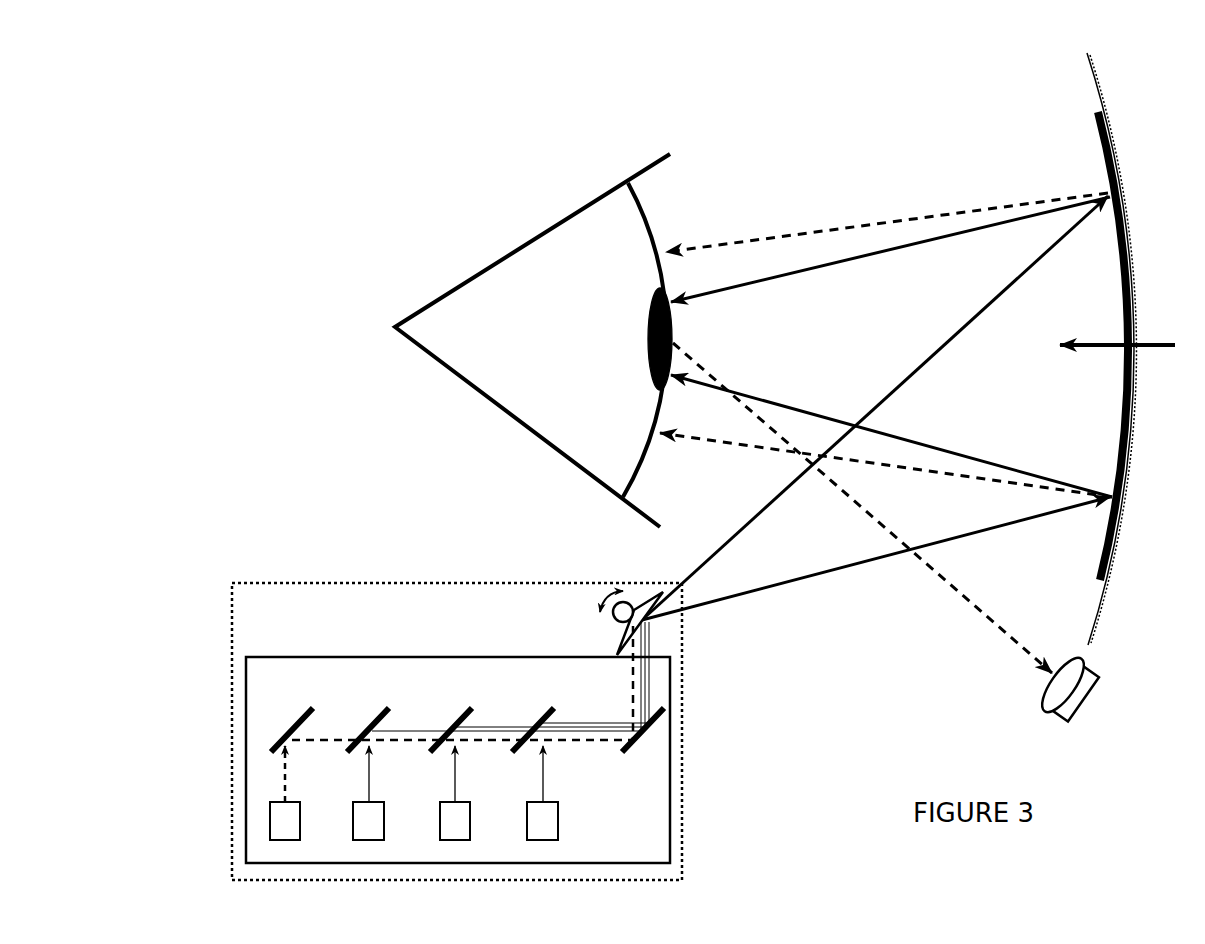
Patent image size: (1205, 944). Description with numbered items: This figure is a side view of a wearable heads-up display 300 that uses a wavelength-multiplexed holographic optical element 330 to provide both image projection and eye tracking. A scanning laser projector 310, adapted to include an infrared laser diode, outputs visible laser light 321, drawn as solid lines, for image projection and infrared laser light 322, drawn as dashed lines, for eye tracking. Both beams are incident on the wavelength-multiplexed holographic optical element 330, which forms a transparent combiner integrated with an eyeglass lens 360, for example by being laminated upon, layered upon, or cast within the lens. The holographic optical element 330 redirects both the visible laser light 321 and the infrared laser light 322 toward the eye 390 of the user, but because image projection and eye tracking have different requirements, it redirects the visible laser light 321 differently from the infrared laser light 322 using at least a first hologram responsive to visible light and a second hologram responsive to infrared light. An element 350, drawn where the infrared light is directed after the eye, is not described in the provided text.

The wearable heads-up display 300 is at (178, 161).
The scanning laser projector 310 is at (457, 731).
The visible laser light 321 is at (722, 293).
The infrared laser light 322 is at (765, 187).
The wavelength-multiplexed holographic optical element 330 is at (1106, 168).
The camera / infrared detector 350 is at (1046, 700).
The eyeglass lens 360 is at (1094, 82).
The eye 390 is at (533, 340).